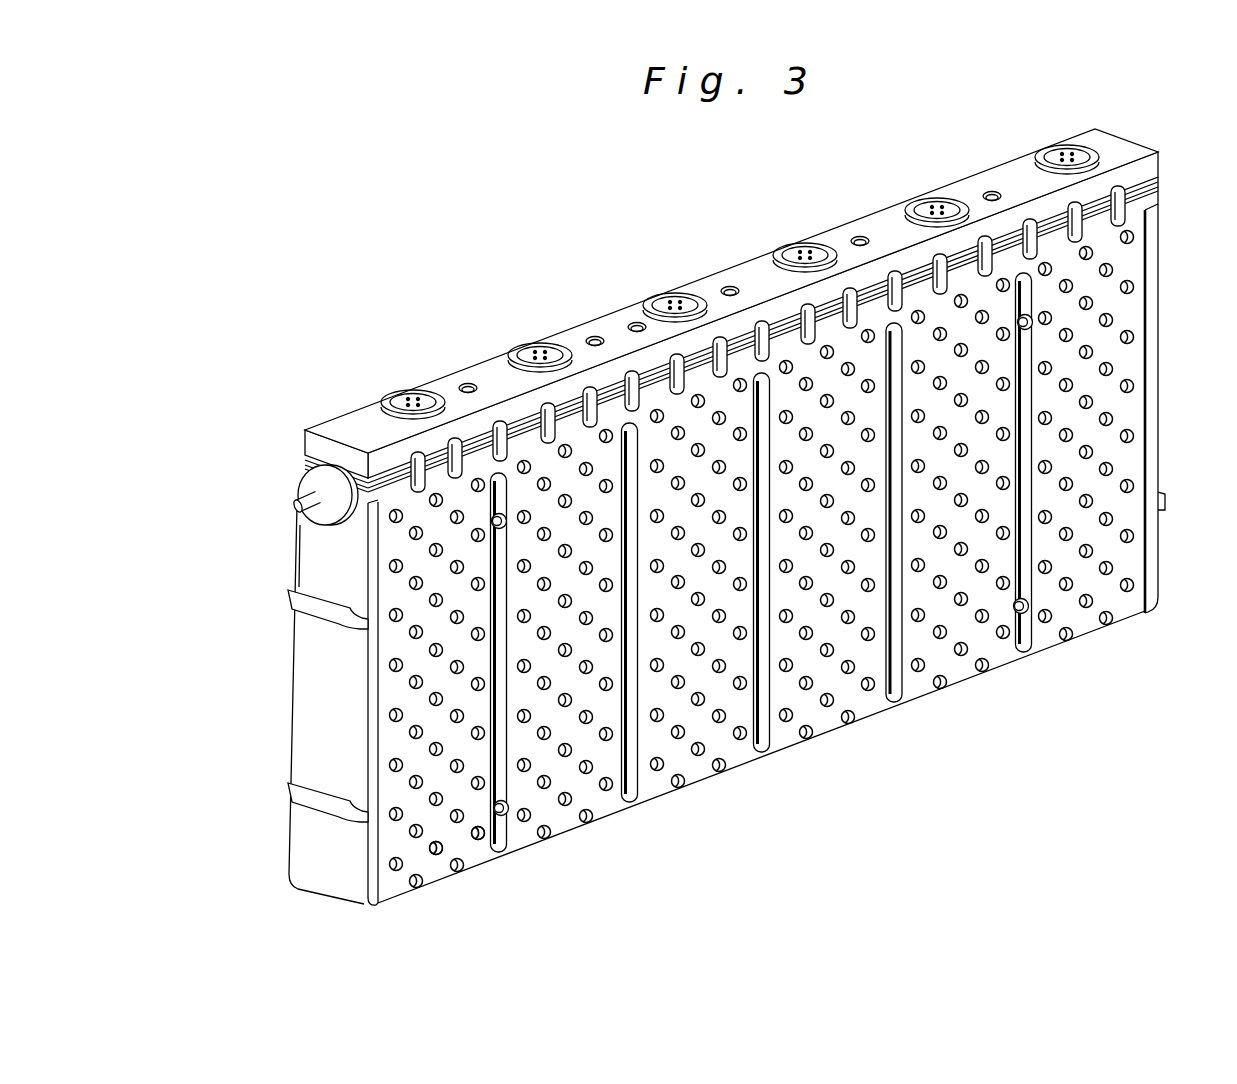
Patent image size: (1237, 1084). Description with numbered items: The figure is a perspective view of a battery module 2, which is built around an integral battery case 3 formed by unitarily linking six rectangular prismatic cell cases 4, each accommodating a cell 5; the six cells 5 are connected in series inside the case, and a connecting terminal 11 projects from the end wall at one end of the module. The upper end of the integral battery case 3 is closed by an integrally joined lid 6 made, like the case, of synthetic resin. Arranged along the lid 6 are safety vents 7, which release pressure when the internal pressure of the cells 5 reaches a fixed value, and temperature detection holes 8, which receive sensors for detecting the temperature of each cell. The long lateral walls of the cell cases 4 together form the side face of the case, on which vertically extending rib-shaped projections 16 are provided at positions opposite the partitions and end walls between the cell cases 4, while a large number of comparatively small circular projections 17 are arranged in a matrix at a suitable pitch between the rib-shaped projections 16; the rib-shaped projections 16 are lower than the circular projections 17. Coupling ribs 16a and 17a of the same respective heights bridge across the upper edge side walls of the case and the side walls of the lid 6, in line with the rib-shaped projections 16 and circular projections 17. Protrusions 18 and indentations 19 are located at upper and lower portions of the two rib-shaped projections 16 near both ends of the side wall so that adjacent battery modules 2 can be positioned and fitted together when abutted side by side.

The battery module 2 is at (286, 418).
The integral battery case 3 is at (288, 673).
The cell case 4 is at (396, 878).
The cell 5 is at (428, 890).
The lid 6 is at (386, 462).
The safety vent 7 is at (681, 299).
The temperature detection hole 8 is at (989, 194).
The connecting terminal 11 is at (296, 490).
The rib-shaped projection 16 is at (1023, 500).
The coupling rib 16a is at (501, 422).
The circular projection 17 is at (478, 843).
The coupling rib 17a is at (421, 452).
The protrusion 18 is at (504, 816).
The indentation 19 is at (496, 527).